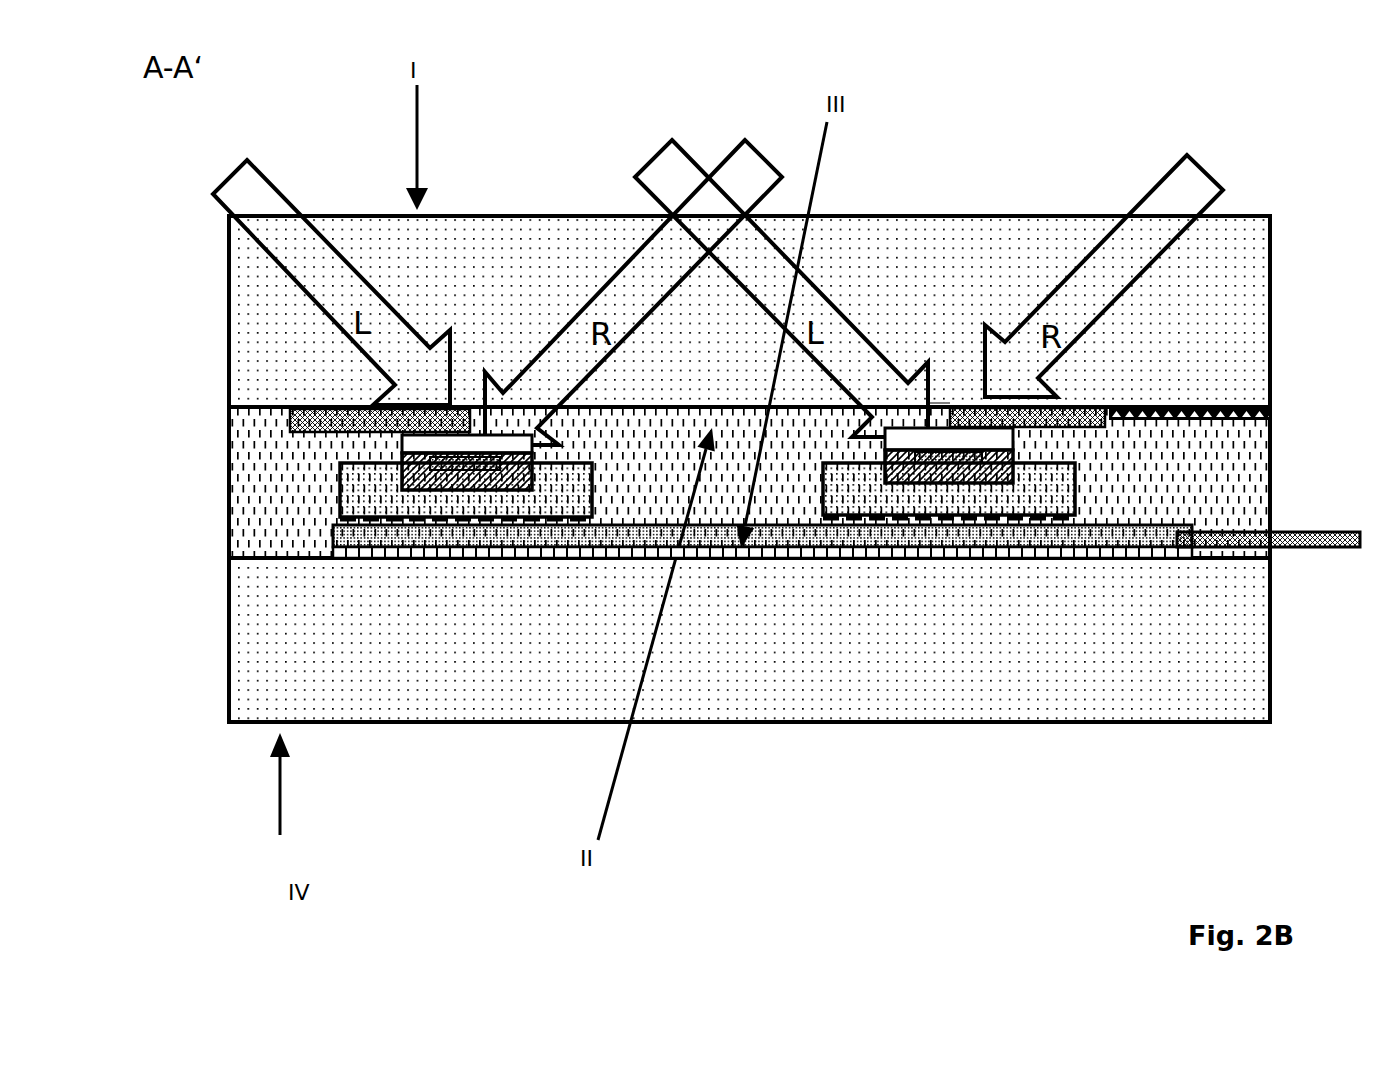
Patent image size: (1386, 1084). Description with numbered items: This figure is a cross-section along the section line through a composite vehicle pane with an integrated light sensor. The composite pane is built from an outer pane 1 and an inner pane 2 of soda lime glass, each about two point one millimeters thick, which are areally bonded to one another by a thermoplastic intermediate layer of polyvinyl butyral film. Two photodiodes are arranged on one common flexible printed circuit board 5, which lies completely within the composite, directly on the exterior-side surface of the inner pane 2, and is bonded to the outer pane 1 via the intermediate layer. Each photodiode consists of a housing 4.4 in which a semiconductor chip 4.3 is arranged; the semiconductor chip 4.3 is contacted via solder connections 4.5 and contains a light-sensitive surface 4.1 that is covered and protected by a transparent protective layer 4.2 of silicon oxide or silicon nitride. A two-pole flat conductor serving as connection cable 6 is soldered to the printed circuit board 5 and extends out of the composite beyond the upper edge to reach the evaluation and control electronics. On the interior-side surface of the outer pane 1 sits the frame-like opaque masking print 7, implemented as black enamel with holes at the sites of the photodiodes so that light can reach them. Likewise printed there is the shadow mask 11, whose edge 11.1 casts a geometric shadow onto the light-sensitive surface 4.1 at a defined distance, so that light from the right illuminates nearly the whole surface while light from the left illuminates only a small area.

The outer pane 1 is at (1188, 275).
The inner pane 2 is at (1190, 690).
The light-sensitive surface 4.1 is at (420, 505).
The transparent protective layer 4.2 is at (448, 443).
The semiconductor chip 4.3 is at (425, 473).
The housing 4.4 is at (355, 488).
The solder connection 4.5 is at (340, 520).
The printed circuit board 5 is at (1150, 533).
The connection cable 6 is at (1303, 547).
The opaque masking print 7 is at (1202, 450).
The shadow mask 11 is at (232, 409).
The edge of the shadow mask 11.1 is at (940, 384).